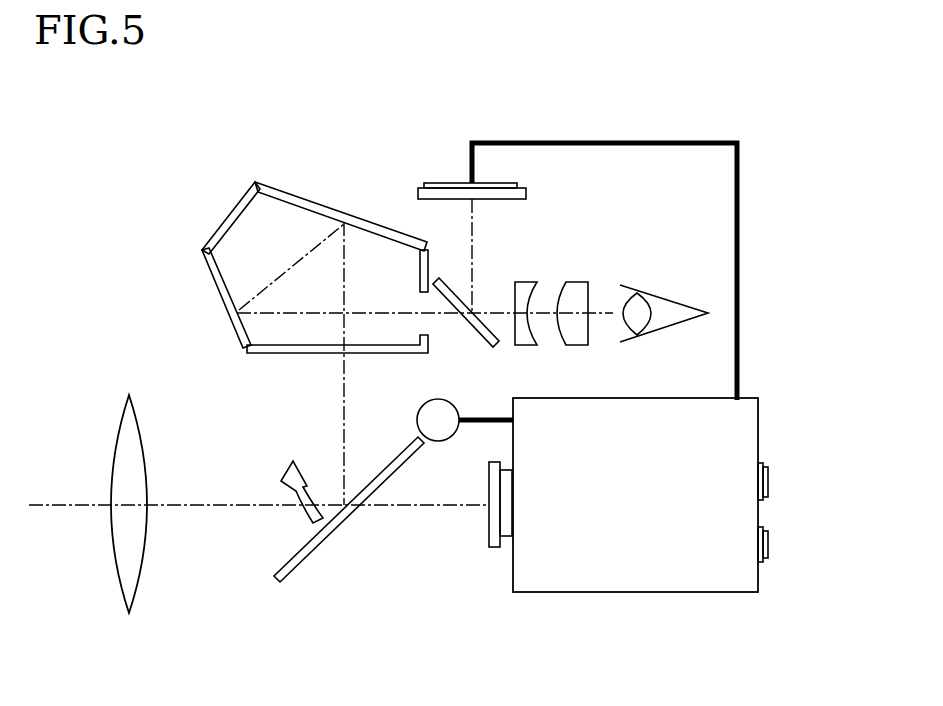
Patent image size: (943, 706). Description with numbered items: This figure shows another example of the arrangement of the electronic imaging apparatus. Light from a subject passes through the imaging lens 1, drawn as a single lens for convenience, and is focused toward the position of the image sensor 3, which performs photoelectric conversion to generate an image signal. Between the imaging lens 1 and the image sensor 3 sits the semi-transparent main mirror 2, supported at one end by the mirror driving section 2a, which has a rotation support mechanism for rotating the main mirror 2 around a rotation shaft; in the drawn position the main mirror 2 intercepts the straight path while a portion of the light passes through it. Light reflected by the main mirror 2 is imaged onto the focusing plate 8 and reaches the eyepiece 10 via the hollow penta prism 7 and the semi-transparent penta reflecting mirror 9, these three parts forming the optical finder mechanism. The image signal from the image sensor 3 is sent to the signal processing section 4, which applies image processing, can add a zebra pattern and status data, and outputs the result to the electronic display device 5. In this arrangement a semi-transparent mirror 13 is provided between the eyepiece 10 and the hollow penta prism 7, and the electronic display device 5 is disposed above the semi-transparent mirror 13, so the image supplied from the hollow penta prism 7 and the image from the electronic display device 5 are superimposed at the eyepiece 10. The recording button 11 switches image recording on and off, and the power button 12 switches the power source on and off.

The imaging lens 1 is at (137, 577).
The main mirror 2 is at (307, 550).
The mirror driving section 2a is at (438, 433).
The image sensor 3 is at (490, 547).
The signal processing section 4 is at (650, 575).
The electronic display device 5 is at (450, 182).
The hollow penta prism 7 is at (357, 218).
The focusing plate 8 is at (405, 352).
The semi-transparent penta reflecting mirror 9 is at (234, 320).
The eyepiece 10 is at (527, 287).
The recording button 11 is at (768, 488).
The power button 12 is at (770, 555).
The semi-transparent mirror 13 is at (488, 343).